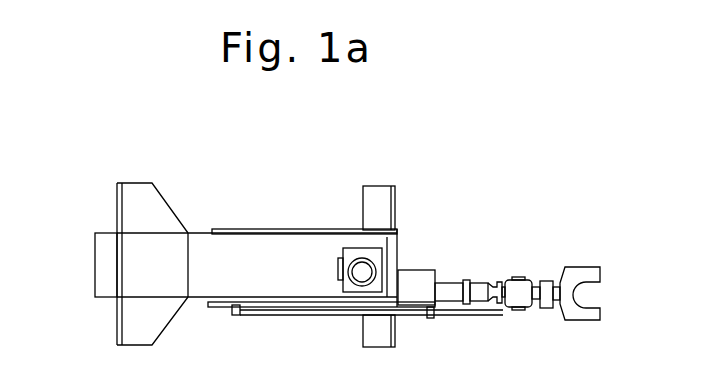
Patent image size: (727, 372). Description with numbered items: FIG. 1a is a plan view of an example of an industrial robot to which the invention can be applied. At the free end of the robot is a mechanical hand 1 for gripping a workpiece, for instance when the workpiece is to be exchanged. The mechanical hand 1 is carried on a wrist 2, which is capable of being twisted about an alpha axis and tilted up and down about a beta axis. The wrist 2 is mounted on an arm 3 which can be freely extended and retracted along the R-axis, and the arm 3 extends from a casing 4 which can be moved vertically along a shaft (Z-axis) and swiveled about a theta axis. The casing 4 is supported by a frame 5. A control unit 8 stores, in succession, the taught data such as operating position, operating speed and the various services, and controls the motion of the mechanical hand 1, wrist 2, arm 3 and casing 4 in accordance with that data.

The mechanical hand 1 is at (595, 268).
The wrist 2 is at (553, 283).
The arm 3 is at (525, 280).
The casing 4 is at (421, 272).
The frame 5 is at (208, 232).
The control unit 8 is at (100, 281).